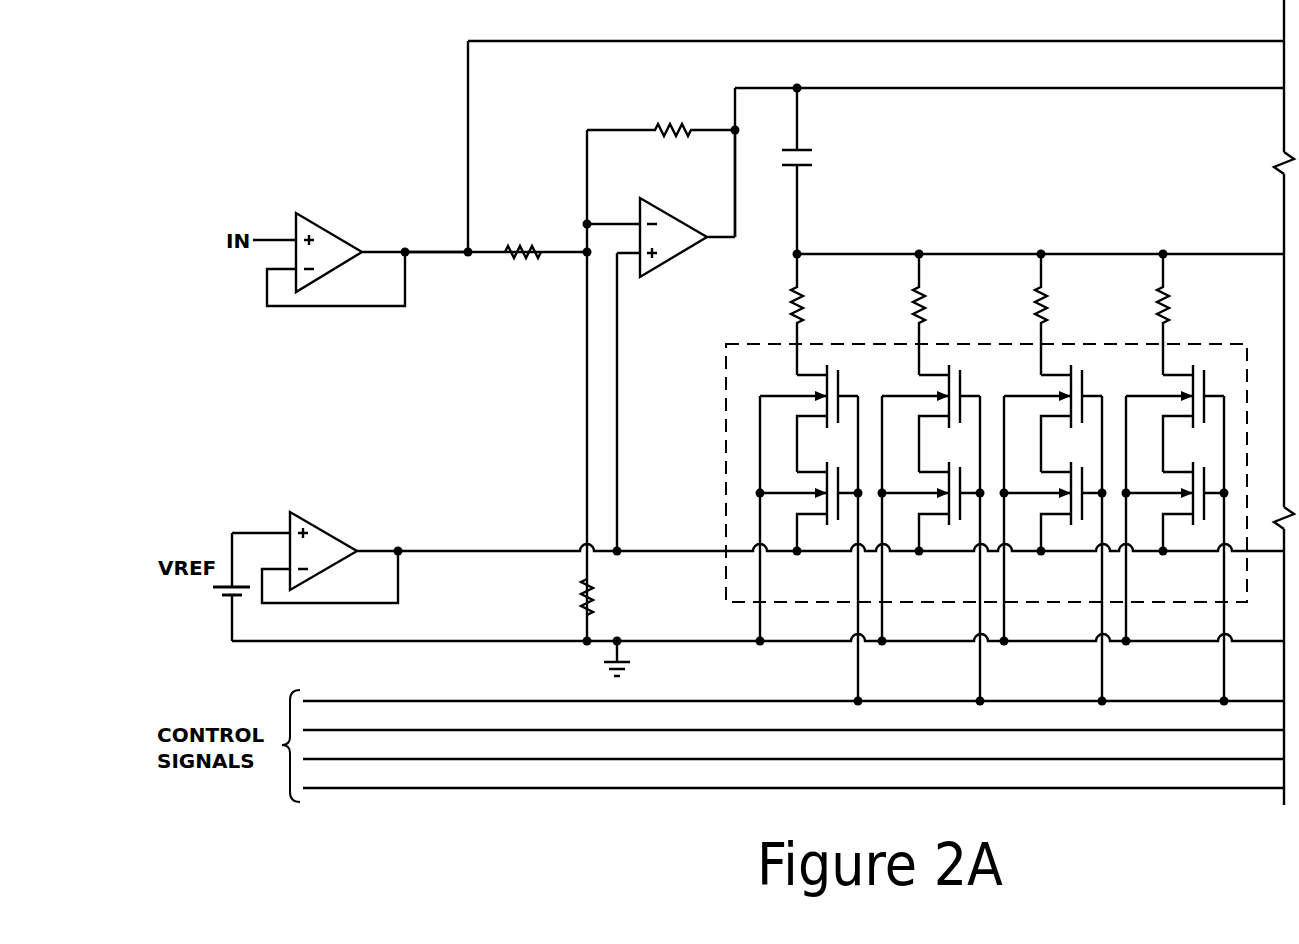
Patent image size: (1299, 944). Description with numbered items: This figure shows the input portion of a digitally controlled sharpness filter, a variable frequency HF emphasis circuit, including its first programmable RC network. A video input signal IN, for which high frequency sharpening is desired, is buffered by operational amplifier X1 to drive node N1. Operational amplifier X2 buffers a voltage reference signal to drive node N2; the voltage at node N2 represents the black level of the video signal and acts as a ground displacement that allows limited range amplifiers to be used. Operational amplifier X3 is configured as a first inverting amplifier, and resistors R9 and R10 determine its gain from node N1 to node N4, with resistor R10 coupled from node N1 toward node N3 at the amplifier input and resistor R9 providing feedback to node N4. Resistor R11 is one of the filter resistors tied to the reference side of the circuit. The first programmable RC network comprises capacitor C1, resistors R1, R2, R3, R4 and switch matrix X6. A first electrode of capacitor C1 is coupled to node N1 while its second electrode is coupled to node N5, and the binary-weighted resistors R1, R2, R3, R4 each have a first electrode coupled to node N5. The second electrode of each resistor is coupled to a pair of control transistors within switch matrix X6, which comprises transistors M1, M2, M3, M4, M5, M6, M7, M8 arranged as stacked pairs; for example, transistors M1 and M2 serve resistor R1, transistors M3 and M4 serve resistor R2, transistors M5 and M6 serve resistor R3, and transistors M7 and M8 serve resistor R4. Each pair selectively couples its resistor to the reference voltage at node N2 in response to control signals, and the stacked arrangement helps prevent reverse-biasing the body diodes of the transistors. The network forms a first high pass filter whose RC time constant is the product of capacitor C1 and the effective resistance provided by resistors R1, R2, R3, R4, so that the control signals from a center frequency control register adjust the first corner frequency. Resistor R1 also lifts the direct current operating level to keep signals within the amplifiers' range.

The operational amplifier X1 is at (427, 259).
The operational amplifier X2 is at (330, 557).
The operational amplifier X3 is at (676, 239).
The switch matrix X6 is at (726, 406).
The node N1 is at (405, 250).
The node N2 is at (398, 549).
The node N3 is at (585, 256).
The node N4 is at (735, 224).
The node N5 is at (799, 252).
The resistor R1 is at (819, 314).
The resistor R2 is at (948, 314).
The resistor R3 is at (1070, 314).
The resistor R4 is at (1192, 314).
The resistor R9 is at (663, 103).
The resistor R10 is at (523, 227).
The resistor R11 is at (559, 599).
The capacitor C1 is at (814, 169).
The transistor M1 is at (806, 414).
The transistor M2 is at (809, 526).
The transistor M3 is at (928, 414).
The transistor M4 is at (931, 526).
The transistor M5 is at (1050, 414).
The transistor M6 is at (1053, 526).
The transistor M7 is at (1172, 414).
The transistor M8 is at (1175, 526).